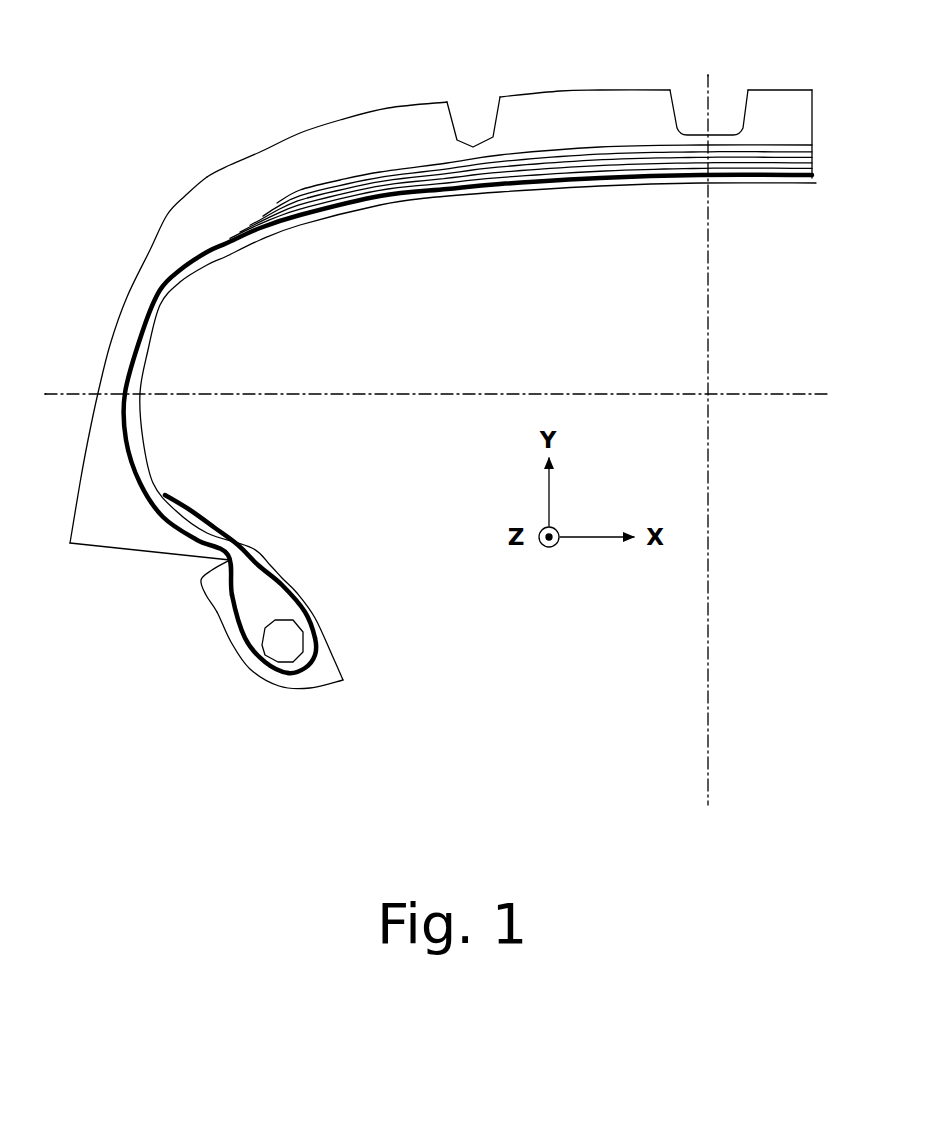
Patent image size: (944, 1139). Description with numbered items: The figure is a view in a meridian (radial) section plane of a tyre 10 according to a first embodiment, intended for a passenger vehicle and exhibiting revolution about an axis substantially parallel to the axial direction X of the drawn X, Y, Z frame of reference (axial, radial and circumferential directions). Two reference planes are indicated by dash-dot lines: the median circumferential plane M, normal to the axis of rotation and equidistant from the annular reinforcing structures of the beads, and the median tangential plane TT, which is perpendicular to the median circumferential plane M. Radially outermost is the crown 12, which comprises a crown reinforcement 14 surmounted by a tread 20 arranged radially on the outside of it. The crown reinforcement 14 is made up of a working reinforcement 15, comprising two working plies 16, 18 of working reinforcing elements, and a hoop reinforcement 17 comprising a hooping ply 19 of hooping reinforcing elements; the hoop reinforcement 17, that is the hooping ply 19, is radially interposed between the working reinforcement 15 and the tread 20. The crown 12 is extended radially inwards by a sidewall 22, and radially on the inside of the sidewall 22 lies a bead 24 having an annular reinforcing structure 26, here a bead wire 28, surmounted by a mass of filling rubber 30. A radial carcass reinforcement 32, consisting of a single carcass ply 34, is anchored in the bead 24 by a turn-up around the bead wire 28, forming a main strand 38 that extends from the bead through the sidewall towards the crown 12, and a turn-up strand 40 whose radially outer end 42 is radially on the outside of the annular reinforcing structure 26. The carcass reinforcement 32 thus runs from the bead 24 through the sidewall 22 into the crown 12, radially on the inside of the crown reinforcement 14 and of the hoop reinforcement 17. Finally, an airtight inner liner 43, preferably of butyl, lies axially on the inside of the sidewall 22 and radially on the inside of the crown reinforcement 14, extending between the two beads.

The tyre 10 is at (205, 100).
The crown 12 is at (570, 113).
The crown reinforcement 14 is at (648, 133).
The working reinforcement 15 is at (227, 227).
The working ply 16 is at (249, 212).
The hoop reinforcement 17 is at (378, 162).
The working ply 18 is at (203, 177).
The hooping ply 19 is at (317, 187).
The tread 20 is at (388, 108).
The sidewall 22 is at (127, 322).
The bead 24 is at (340, 667).
The annular reinforcing structure 26 is at (300, 664).
The bead wire 28 is at (282, 640).
The mass of filling rubber 30 is at (277, 615).
The radial carcass reinforcement 32 is at (158, 275).
The carcass ply 34 is at (125, 370).
The main strand 38 is at (297, 593).
The turn-up strand 40 is at (233, 613).
The radially outer end of the turn-up strand 42 is at (230, 560).
The airtight inner liner 43 is at (427, 197).
The median circumferential plane M is at (707, 285).
The median tangential plane TT is at (783, 392).